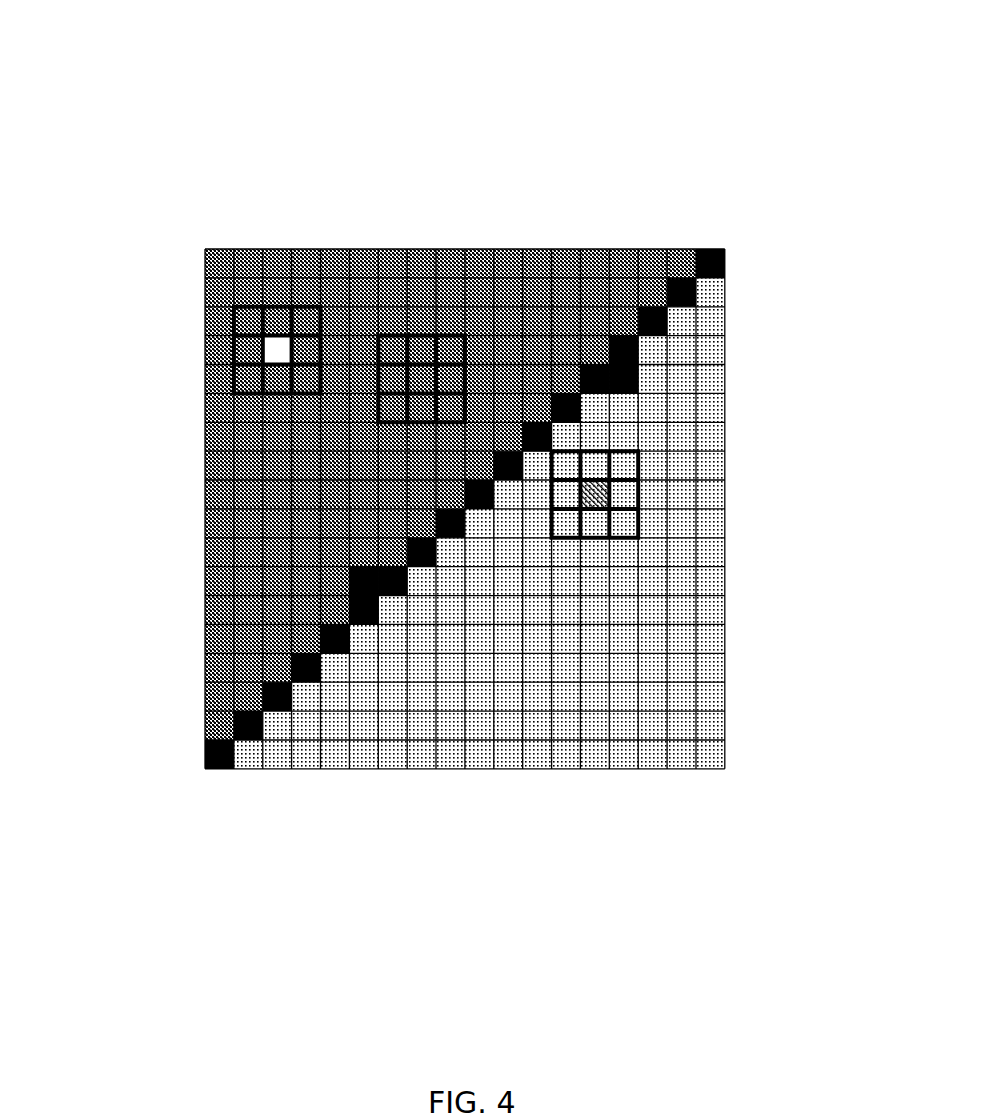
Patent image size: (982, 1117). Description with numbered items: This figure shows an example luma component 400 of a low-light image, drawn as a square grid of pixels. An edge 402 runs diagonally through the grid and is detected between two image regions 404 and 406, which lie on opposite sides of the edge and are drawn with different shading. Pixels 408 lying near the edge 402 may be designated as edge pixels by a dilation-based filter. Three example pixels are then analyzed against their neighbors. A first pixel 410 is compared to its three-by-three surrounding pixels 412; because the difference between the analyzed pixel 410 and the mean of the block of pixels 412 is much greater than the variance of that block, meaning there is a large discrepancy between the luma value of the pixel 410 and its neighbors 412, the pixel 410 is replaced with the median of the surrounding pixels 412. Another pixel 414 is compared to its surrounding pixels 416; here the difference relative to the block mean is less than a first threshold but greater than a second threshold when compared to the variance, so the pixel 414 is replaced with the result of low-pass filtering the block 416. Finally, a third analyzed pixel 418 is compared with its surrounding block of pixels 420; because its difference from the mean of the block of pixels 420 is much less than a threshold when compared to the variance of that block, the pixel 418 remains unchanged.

The luma component 400 is at (439, 423).
The edge 402 is at (717, 246).
The image region 404 is at (230, 245).
The image region 406 is at (703, 718).
The pixels near the edge 408 is at (630, 368).
The first pixel 410 is at (272, 342).
The 3×3 surrounding pixels 412 is at (248, 375).
The pixel 414 is at (587, 487).
The surrounding pixels 416 is at (610, 511).
The third analyzed pixel 418 is at (408, 375).
The surrounding block of pixels 420 is at (438, 348).